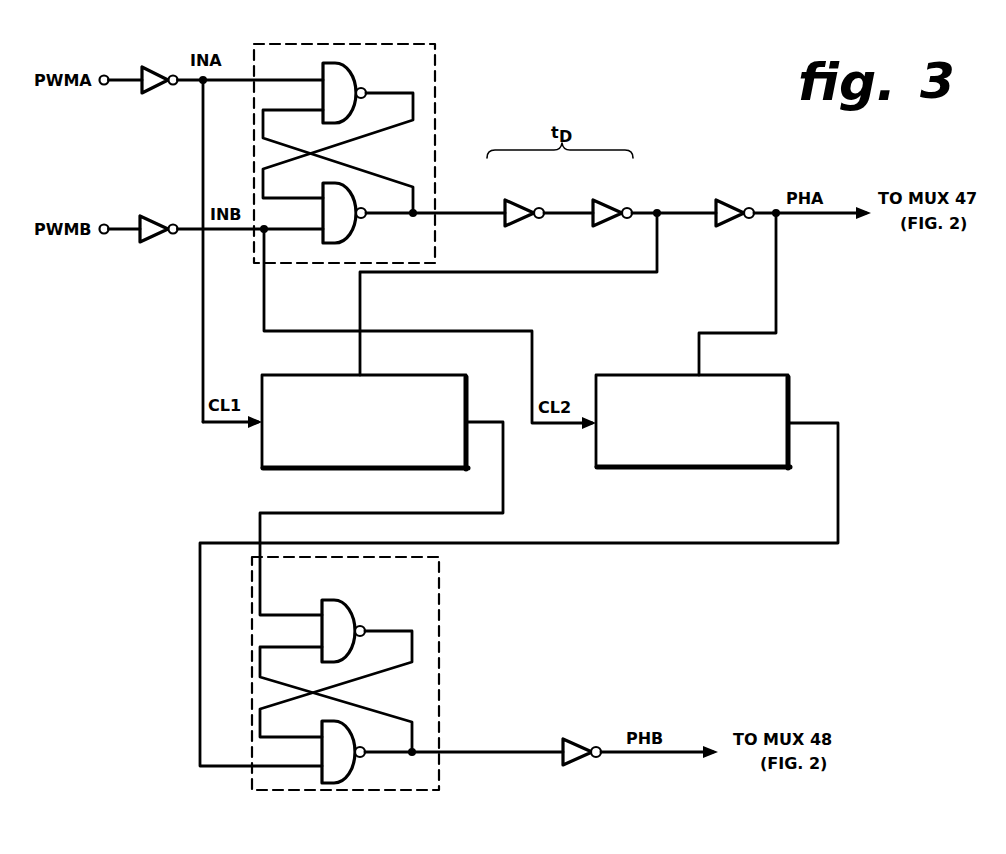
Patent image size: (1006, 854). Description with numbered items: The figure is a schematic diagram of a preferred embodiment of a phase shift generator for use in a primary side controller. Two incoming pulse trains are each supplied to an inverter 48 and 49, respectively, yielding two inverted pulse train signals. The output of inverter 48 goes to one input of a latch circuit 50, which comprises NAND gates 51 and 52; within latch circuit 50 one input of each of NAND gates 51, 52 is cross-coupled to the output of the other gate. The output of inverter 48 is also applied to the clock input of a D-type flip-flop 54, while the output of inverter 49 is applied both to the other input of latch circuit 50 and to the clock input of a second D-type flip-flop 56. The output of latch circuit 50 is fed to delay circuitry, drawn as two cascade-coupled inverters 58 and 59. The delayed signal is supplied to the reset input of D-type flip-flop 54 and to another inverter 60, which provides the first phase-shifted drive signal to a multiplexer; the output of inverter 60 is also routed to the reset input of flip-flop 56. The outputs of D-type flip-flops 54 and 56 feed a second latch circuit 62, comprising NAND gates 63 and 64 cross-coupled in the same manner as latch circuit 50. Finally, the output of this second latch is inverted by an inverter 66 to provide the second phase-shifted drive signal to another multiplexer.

The inverter 48 is at (159, 94).
The inverter 49 is at (157, 243).
The latch circuit 50 is at (391, 153).
The NAND gate 51 is at (350, 70).
The NAND gate 52 is at (350, 236).
The D-type flip-flop 54 is at (262, 377).
The second D-type flip-flop 56 is at (789, 375).
The inverter 58 is at (527, 202).
The inverter 59 is at (615, 202).
The inverter 60 is at (737, 202).
The second latch circuit 62 is at (391, 674).
The NAND gate 63 is at (350, 607).
The NAND gate 64 is at (350, 773).
The inverter 66 is at (575, 735).